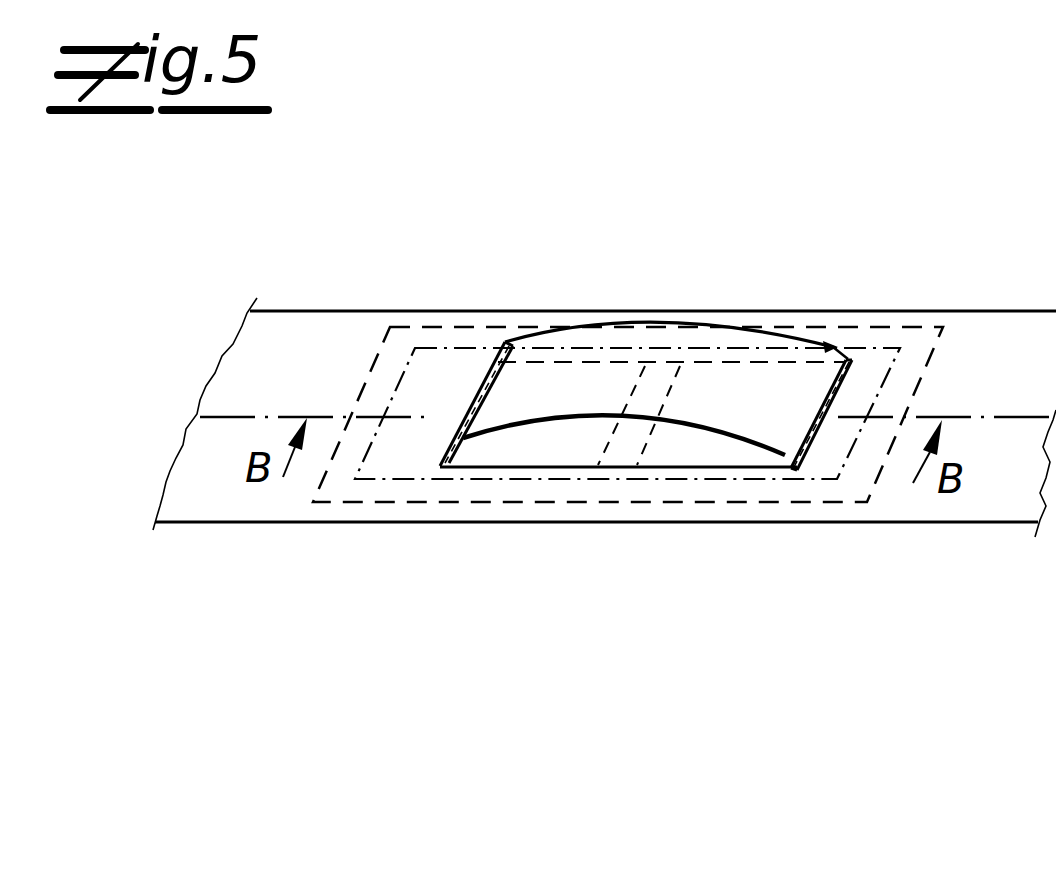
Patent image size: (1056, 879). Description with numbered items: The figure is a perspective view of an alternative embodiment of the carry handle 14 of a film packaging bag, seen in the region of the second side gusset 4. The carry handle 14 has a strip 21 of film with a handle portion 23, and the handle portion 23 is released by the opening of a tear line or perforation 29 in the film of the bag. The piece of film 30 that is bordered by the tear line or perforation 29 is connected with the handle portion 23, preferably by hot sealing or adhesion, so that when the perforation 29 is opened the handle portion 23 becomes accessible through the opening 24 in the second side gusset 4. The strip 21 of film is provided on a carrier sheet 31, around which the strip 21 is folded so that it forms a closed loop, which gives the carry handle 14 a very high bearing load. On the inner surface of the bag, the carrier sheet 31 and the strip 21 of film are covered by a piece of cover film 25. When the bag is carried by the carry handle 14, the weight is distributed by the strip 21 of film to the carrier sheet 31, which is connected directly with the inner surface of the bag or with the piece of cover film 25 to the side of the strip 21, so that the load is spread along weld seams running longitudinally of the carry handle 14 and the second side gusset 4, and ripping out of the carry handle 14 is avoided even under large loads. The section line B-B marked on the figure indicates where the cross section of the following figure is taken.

The second side gusset 4 is at (297, 328).
The carry handle 14 is at (611, 292).
The strip of film 21 is at (556, 447).
The handle portion 23 is at (502, 425).
The opening 24 is at (437, 467).
The piece of cover film 25 is at (832, 505).
The tear line or perforation 29 is at (632, 467).
The piece of film 30 is at (783, 445).
The carrier sheet 31 is at (703, 450).